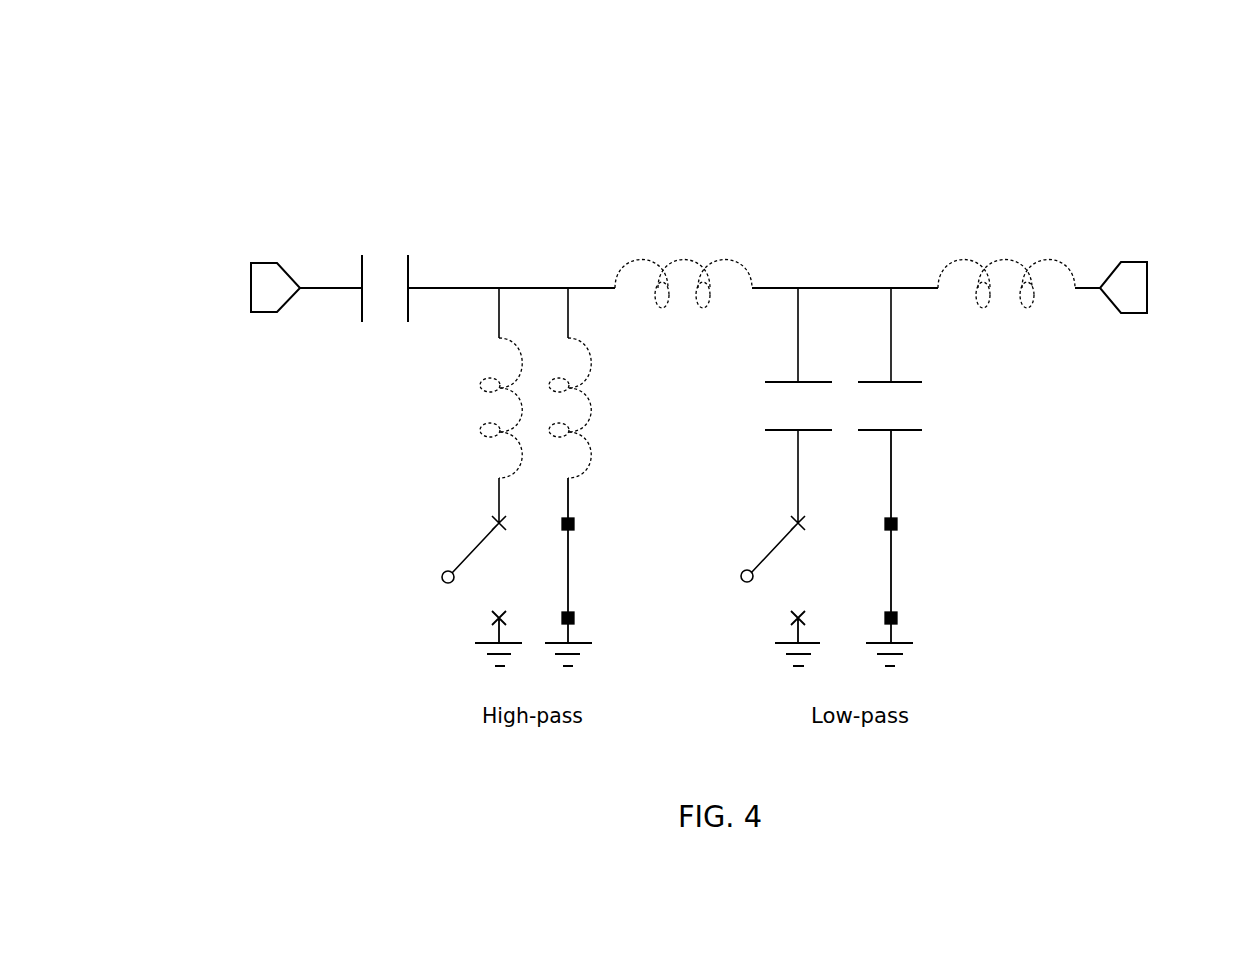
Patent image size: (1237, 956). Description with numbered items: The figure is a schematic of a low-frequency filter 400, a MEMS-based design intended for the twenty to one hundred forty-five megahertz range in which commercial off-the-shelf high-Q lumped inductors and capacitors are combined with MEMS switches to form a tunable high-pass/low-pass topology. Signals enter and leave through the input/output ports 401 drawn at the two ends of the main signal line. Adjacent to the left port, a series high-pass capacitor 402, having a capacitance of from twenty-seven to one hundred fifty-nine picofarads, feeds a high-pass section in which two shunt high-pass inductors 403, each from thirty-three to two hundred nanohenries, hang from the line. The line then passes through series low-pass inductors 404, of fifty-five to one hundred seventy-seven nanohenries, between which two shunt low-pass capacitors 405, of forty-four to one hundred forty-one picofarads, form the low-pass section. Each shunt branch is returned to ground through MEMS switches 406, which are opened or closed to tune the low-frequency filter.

The low-frequency filter 400 is at (306, 125).
The input/output ports 401 is at (251, 295).
The high-pass capacitor 402 is at (383, 246).
The high-pass inductors 403 is at (461, 406).
The low-pass inductors 404 is at (691, 249).
The low-pass capacitors 405 is at (749, 387).
The MEMS switches 406 is at (457, 555).